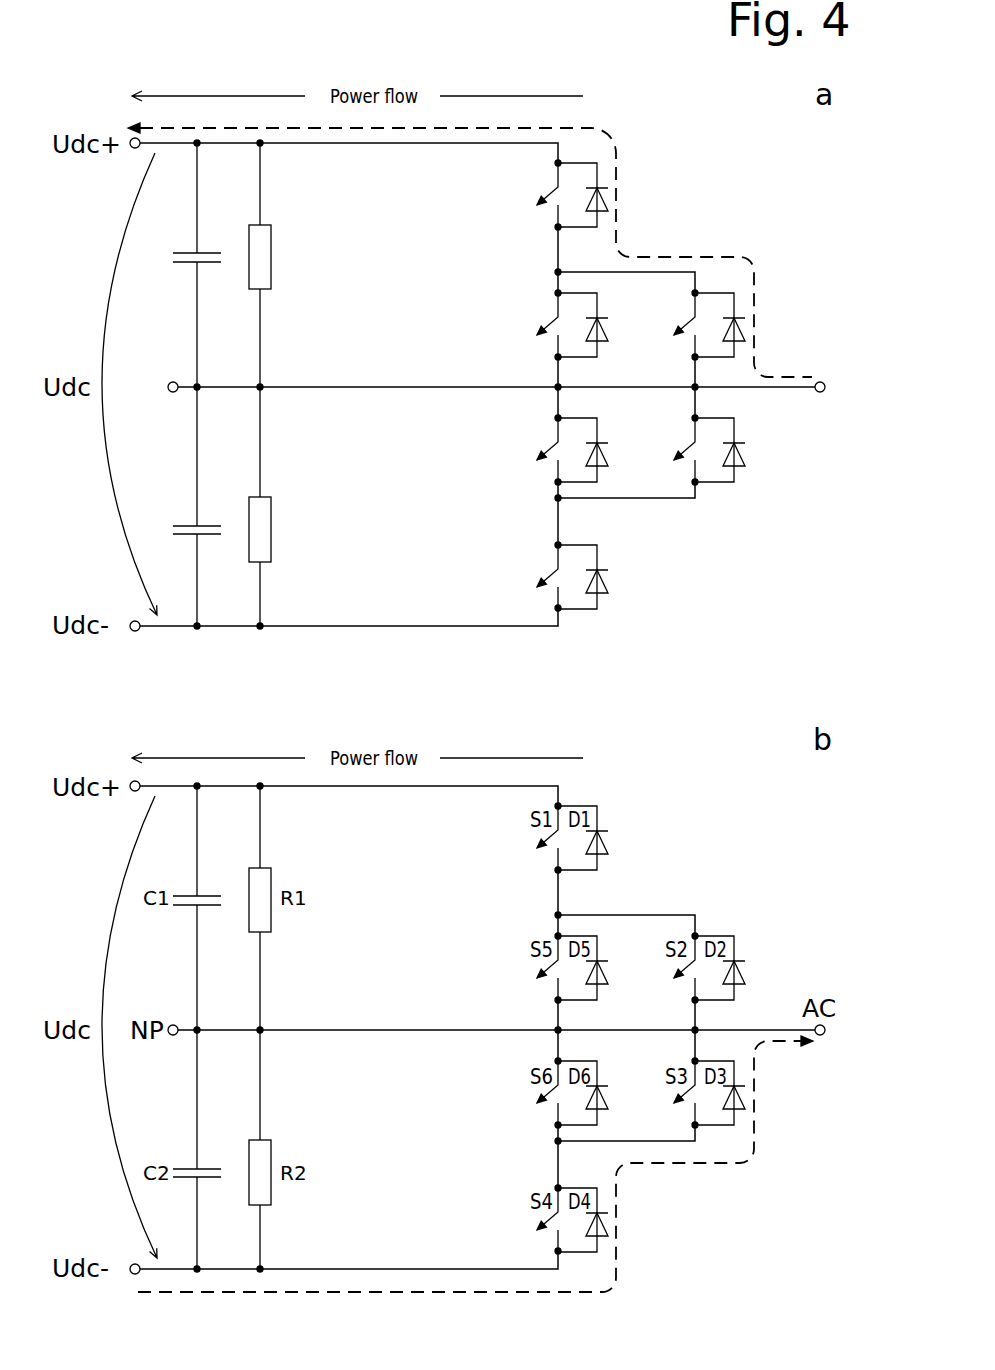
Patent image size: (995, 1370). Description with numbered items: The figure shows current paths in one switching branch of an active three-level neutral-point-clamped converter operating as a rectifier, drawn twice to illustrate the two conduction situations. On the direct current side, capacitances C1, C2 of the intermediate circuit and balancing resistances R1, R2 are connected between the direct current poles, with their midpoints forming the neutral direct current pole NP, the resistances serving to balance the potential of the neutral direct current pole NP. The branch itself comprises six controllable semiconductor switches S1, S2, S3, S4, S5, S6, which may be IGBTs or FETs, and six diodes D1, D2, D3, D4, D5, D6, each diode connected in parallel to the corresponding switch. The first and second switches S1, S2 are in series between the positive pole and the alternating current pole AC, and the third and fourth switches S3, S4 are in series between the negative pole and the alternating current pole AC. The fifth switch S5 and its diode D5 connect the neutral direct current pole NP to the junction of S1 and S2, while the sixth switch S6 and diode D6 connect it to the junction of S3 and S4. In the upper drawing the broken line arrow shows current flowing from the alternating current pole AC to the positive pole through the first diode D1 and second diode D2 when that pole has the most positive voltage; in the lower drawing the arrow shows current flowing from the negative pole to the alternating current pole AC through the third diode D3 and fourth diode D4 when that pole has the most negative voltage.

The first controllable semiconductor switch S1 is at (544, 195).
The second controllable semiconductor switch S2 is at (680, 325).
The third controllable semiconductor switch S3 is at (680, 450).
The fourth controllable semiconductor switch S4 is at (544, 577).
The fifth controllable semiconductor switch S5 is at (544, 325).
The sixth controllable semiconductor switch S6 is at (544, 450).
The first diode D1 is at (583, 195).
The second diode D2 is at (720, 325).
The third diode D3 is at (720, 450).
The fourth diode D4 is at (583, 577).
The fifth diode D5 is at (583, 325).
The sixth diode D6 is at (583, 450).
The capacitance C1 is at (182, 265).
The capacitance C2 is at (182, 506).
The balancing resistance R1 is at (278, 265).
The balancing resistance R2 is at (278, 506).
The neutral direct current pole NP is at (147, 387).
The alternating current pole AC is at (819, 416).